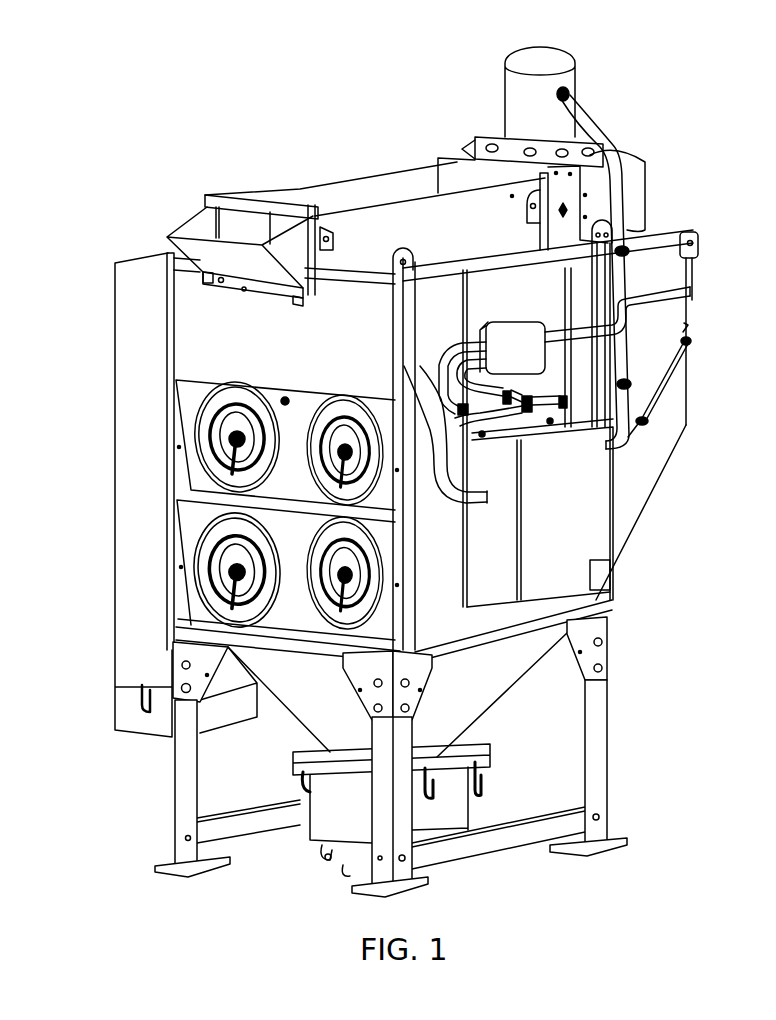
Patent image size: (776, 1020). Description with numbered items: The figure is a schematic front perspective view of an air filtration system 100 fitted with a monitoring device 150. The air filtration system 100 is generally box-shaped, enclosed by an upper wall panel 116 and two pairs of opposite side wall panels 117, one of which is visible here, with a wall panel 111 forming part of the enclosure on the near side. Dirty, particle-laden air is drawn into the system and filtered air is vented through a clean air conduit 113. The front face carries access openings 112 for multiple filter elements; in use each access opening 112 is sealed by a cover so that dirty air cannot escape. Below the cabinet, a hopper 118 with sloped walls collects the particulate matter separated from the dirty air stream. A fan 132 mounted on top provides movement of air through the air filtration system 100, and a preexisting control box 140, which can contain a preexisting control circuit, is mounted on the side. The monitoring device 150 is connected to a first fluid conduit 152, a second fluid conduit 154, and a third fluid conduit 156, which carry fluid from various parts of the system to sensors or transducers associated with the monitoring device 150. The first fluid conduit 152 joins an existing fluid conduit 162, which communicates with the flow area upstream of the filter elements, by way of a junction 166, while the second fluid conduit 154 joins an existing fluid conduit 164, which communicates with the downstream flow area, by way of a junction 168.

The air filtration system 100 is at (638, 92).
The side panel 111 is at (133, 318).
The access openings 112 is at (210, 408).
The clean air conduit 113 is at (330, 197).
The upper wall panel 116 is at (493, 308).
The side wall panels 117 is at (420, 190).
The hopper 118 is at (460, 688).
The fan 132 is at (518, 98).
The preexisting control box 140 is at (593, 525).
The monitoring device 150 is at (528, 345).
The first fluid conduit 152 is at (462, 342).
The second fluid conduit 154 is at (462, 358).
The third fluid conduit 156 is at (670, 295).
The existing fluid conduit 162 is at (455, 408).
The existing fluid conduit 164 is at (510, 413).
The junction 166 is at (462, 482).
The junction 168 is at (530, 409).